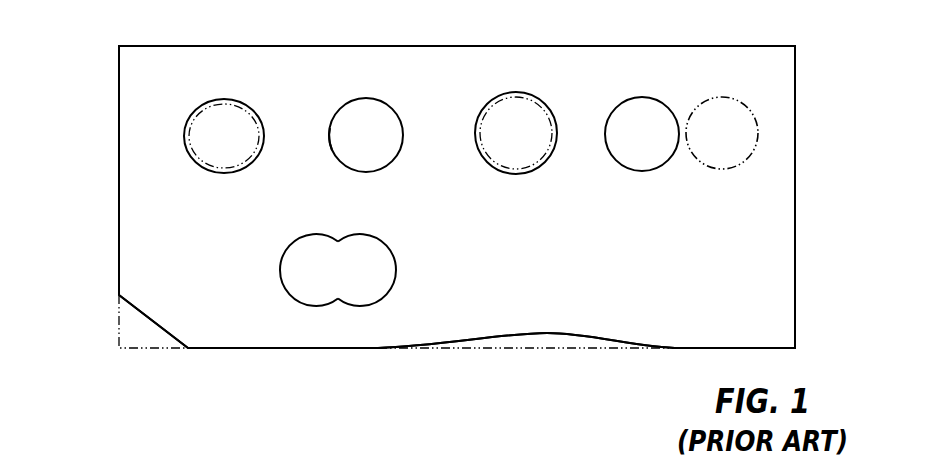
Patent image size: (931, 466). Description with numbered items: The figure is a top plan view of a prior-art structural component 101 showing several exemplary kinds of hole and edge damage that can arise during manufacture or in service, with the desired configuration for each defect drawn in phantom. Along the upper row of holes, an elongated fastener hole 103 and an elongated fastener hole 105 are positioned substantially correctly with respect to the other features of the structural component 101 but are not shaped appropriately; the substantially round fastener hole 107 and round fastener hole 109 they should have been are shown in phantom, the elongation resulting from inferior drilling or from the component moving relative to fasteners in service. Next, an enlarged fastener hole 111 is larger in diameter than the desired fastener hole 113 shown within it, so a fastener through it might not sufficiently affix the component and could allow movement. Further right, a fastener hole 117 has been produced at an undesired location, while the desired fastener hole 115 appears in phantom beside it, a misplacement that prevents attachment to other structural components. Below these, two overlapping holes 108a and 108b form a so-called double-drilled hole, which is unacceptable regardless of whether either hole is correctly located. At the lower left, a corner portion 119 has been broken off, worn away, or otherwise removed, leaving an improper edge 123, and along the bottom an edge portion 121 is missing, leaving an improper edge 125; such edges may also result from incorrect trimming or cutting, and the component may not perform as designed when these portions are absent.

The structural component 101 is at (778, 303).
The elongated fastener hole 103 is at (183, 133).
The elongated fastener hole 105 is at (367, 98).
The round fastener hole 107 is at (184, 142).
The first lobe of double hole 108a is at (281, 267).
The second lobe of double hole 108b is at (395, 261).
The round fastener hole 109 is at (331, 146).
The enlarged fastener hole 111 is at (515, 92).
The desired fastener hole 113 is at (476, 142).
The desired fastener hole 115 is at (707, 96).
The fastener hole 117 is at (613, 163).
The corner portion 119 is at (118, 340).
The edge portion 121 is at (500, 350).
The improper edge 123 is at (147, 318).
The improper edge 125 is at (547, 333).